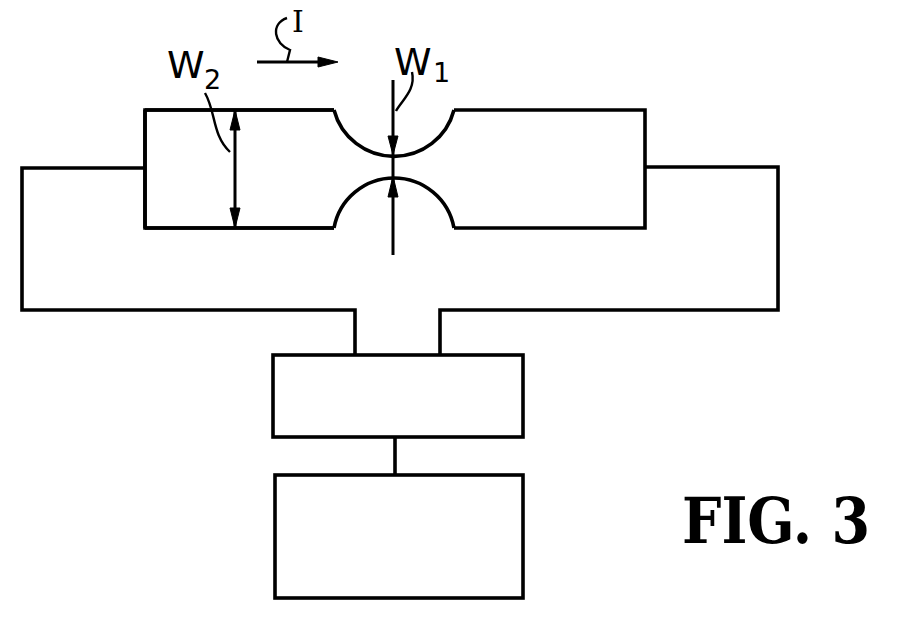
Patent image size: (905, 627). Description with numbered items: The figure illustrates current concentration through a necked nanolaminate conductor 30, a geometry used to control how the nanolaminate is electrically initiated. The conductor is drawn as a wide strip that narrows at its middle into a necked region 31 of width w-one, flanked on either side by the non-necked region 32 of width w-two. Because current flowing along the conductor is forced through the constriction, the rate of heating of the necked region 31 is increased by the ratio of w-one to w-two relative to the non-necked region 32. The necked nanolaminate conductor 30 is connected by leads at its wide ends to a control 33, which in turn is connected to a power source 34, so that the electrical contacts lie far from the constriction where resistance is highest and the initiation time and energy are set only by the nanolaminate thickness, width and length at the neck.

The necked nanolaminate conductor 30 is at (608, 159).
The necked region 31 is at (383, 165).
The non-necked region 32 is at (293, 172).
The control 33 is at (273, 391).
The power source 34 is at (275, 540).